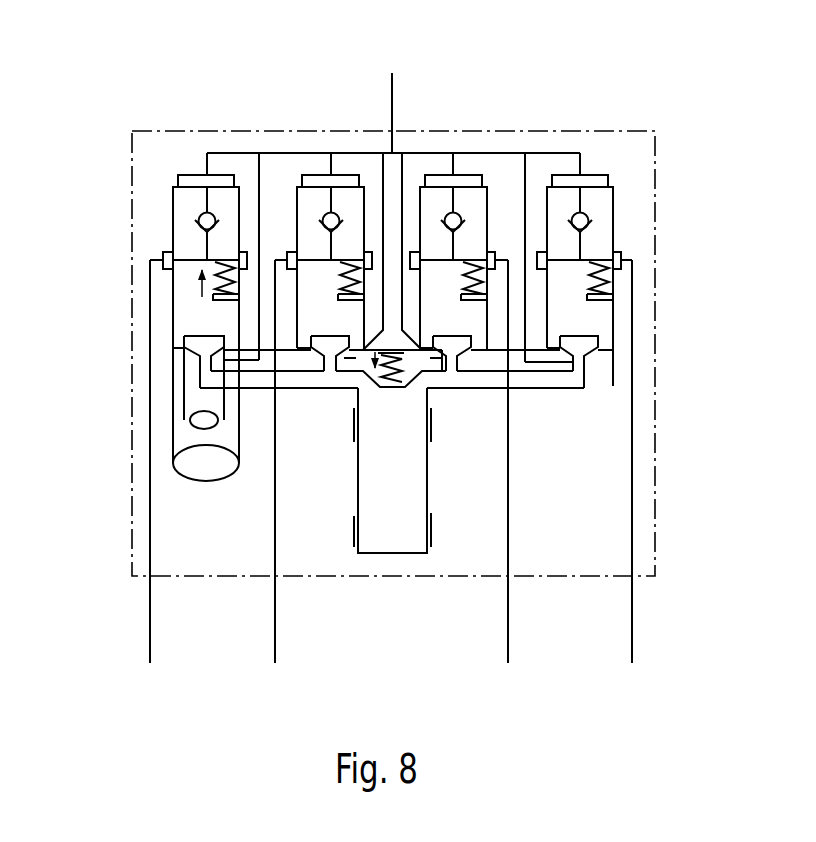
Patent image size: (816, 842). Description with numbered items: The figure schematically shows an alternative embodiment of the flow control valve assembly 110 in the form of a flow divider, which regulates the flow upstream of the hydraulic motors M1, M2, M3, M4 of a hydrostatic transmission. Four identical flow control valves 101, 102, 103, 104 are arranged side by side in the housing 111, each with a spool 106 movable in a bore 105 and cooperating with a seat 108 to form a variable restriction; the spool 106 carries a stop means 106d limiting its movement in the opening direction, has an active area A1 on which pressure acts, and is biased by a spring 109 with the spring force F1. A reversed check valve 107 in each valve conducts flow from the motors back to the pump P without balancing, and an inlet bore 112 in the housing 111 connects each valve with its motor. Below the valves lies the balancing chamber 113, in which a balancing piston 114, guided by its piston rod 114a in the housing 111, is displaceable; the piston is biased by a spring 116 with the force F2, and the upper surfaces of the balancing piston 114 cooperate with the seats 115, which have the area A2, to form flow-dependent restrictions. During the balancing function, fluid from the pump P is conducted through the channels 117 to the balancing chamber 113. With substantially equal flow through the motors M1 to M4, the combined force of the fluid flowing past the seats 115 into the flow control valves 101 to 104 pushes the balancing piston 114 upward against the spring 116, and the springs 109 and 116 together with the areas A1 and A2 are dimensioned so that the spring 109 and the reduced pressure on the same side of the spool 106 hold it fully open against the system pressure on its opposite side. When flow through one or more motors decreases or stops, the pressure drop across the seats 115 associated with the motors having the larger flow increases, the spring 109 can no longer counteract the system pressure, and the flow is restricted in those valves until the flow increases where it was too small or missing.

The flow control valve 101 is at (165, 273).
The flow control valve 102 is at (366, 224).
The flow control valve 103 is at (472, 263).
The flow control valve 104 is at (615, 214).
The bore 105 is at (170, 313).
The spool 106 is at (190, 240).
The stop means 106d is at (170, 186).
The check valve 107 is at (196, 222).
The seat 108 is at (164, 268).
The spring 109 is at (226, 294).
The flow control valve assembly 110 is at (651, 303).
The housing 111 is at (603, 507).
The inlet bore 112 is at (148, 553).
The balancing chamber 113 is at (613, 367).
The balancing piston 114 is at (540, 390).
The piston rod 114a is at (407, 495).
The seats 115 is at (472, 353).
The spring 116 is at (398, 387).
The channels 117 is at (528, 176).
The pump P is at (393, 209).
The active area A1 is at (192, 471).
The seat area A2 is at (202, 422).
The spring force F1 is at (191, 286).
The spring force F2 is at (367, 364).
The hydraulic motor M1 is at (169, 631).
The hydraulic motor M2 is at (295, 631).
The hydraulic motor M3 is at (527, 631).
The hydraulic motor M4 is at (652, 631).